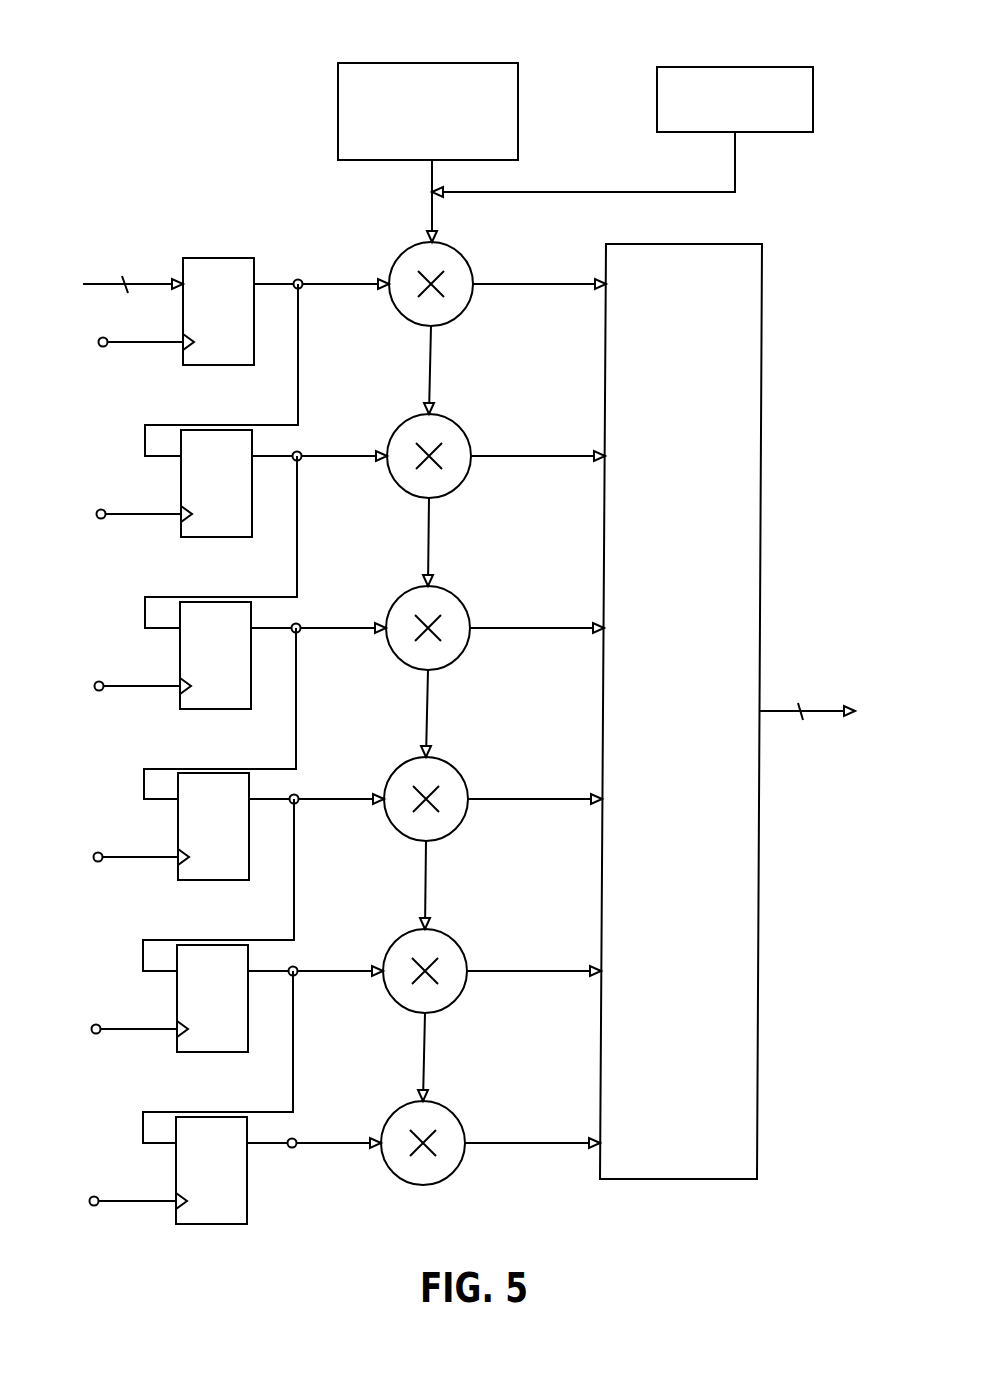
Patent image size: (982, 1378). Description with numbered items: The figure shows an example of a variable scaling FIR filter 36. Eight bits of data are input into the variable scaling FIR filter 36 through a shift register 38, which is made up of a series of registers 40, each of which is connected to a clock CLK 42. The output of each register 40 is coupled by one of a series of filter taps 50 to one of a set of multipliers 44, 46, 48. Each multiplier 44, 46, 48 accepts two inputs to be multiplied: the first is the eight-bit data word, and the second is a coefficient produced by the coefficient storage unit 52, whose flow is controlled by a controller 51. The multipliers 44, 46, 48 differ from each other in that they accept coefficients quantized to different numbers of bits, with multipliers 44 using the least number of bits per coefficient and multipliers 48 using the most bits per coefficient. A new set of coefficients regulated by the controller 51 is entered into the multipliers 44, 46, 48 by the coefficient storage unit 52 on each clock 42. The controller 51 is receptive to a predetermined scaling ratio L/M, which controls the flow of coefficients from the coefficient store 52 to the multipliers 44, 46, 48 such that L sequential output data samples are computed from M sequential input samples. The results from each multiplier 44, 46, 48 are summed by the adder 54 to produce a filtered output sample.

The variable scaling FIR filter 36 is at (234, 76).
The shift register 38 is at (216, 204).
The register 40 is at (257, 271).
The clock 42 is at (100, 354).
The multiplier 44 is at (460, 315).
The multiplier 46 is at (458, 487).
The multiplier 48 is at (457, 659).
The filter tap 50 is at (345, 288).
The controller 51 is at (742, 65).
The coefficient storage unit 52 is at (520, 115).
The adder 54 is at (763, 378).